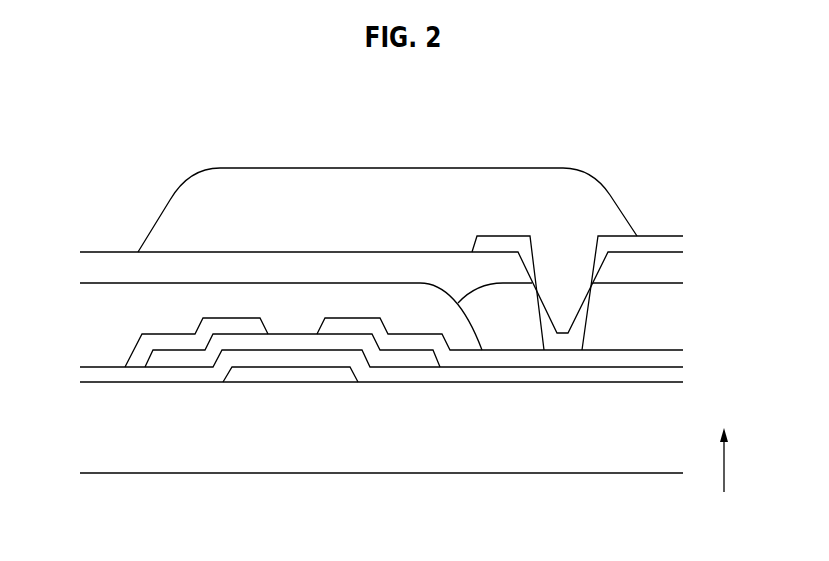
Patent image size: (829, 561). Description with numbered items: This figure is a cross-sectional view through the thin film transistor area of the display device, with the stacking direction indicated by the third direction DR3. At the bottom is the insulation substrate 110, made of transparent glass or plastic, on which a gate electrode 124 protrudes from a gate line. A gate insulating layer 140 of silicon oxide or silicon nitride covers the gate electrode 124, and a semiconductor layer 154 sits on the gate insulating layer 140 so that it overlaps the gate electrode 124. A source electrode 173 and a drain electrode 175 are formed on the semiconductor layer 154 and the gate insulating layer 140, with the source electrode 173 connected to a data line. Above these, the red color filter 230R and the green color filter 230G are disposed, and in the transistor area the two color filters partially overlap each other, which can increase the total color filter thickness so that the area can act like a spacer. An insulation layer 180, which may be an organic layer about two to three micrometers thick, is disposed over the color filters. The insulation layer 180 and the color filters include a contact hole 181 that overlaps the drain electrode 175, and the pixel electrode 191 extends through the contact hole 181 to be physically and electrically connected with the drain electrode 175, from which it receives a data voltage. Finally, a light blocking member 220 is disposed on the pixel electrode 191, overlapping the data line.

The insulation substrate 110 is at (363, 465).
The gate electrode 124 is at (288, 375).
The gate insulating layer 140 is at (555, 375).
The semiconductor layer 154 is at (197, 360).
The source electrode 173 is at (165, 343).
The drain electrode 175 is at (473, 360).
The insulation layer 180 is at (105, 252).
The contact hole 181 is at (566, 280).
The pixel electrode 191 is at (497, 242).
The light blocking member 220 is at (368, 178).
The red color filter 230R is at (103, 335).
The green color filter 230G is at (628, 337).
The third direction DR3 is at (725, 476).